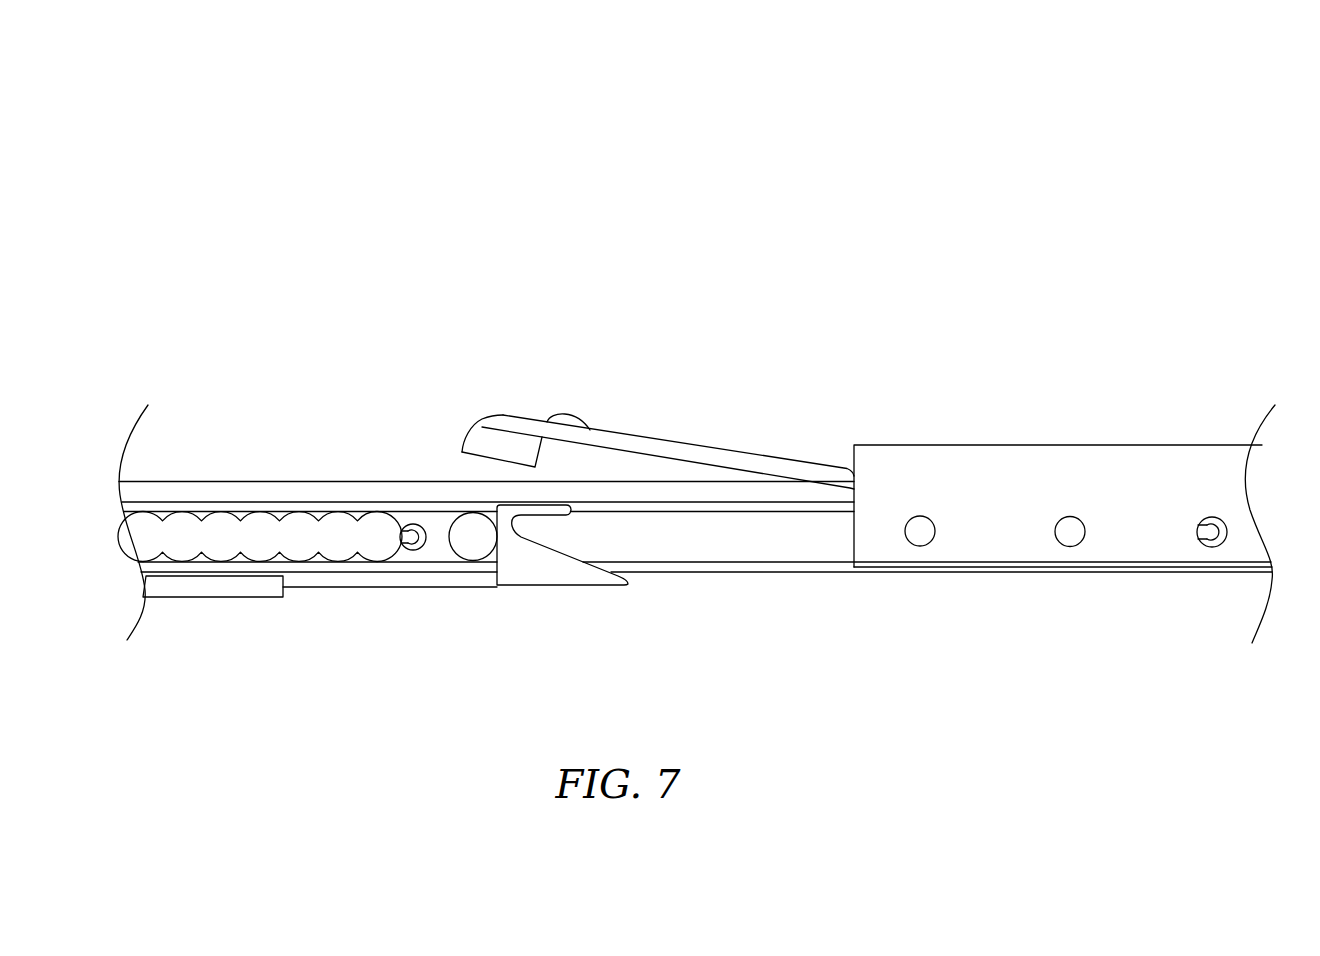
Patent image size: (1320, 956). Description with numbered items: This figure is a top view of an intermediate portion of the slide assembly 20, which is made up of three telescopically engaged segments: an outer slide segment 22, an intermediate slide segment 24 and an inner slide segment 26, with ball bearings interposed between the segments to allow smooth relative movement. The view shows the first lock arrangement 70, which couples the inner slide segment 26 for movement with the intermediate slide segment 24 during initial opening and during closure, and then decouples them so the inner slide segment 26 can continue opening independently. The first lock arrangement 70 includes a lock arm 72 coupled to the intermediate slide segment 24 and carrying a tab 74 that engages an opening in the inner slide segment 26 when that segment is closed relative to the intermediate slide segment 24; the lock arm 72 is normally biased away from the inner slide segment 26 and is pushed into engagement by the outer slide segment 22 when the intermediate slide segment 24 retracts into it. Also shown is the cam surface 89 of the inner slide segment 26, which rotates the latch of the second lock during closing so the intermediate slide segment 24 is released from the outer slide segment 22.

The slide assembly 20 is at (850, 155).
The outer slide segment 22 is at (955, 444).
The intermediate slide segment 24 is at (788, 573).
The inner slide segment 26 is at (392, 588).
The first lock arrangement 70 is at (621, 395).
The lock arm 72 is at (746, 452).
The tab 74 is at (477, 446).
The cam surface 89 is at (565, 555).